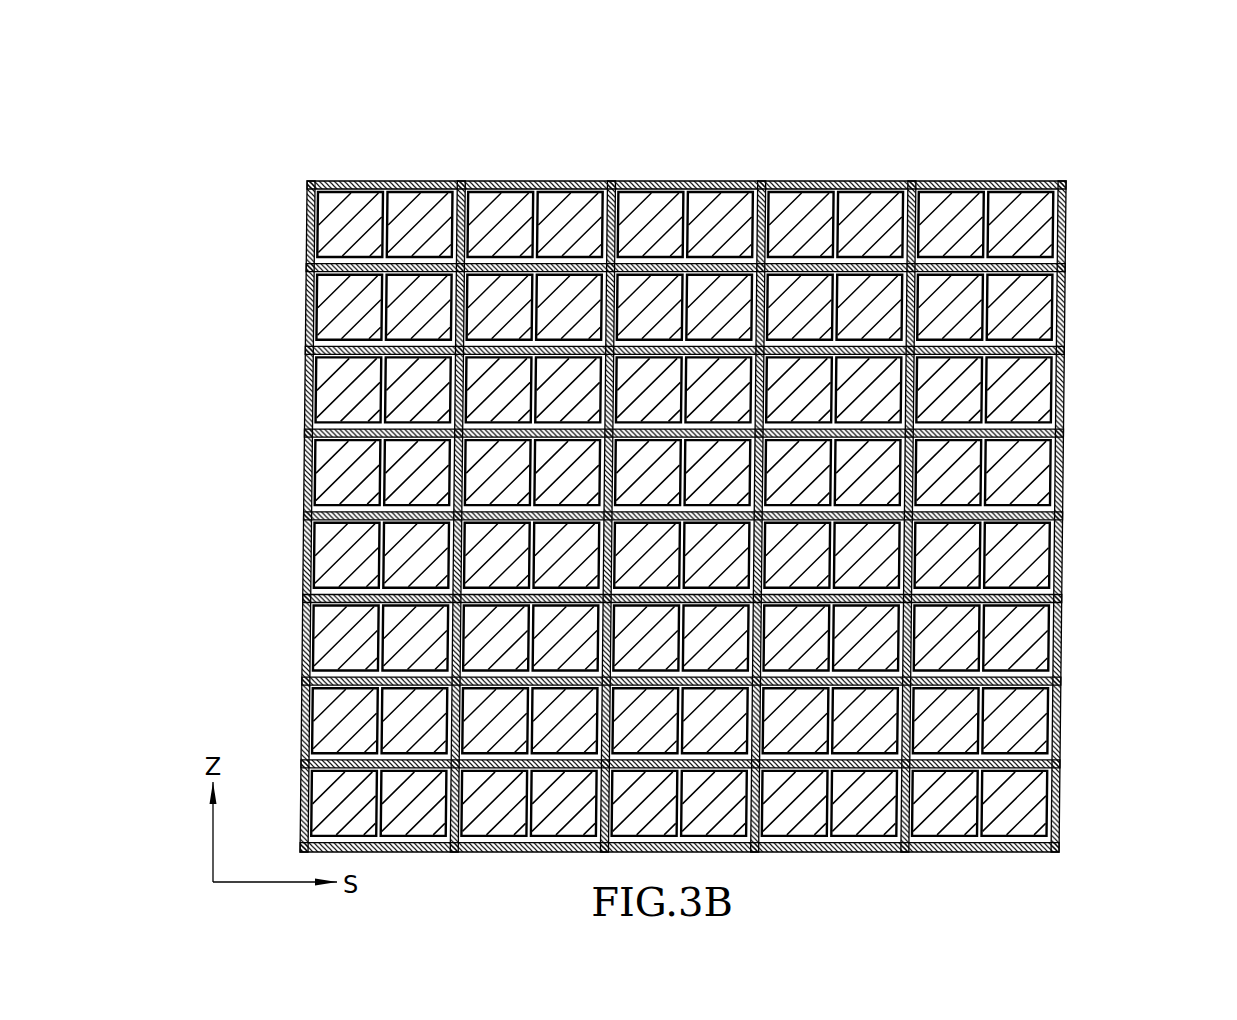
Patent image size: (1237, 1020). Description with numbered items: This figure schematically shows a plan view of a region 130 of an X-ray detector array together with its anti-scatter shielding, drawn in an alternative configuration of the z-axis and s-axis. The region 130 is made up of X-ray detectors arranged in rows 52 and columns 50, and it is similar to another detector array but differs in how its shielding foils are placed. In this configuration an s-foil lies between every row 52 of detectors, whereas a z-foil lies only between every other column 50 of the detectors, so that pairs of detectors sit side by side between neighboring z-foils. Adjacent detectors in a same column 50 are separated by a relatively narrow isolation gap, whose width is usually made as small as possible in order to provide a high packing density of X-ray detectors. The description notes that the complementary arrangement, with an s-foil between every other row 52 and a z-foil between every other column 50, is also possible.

The region of a detector array 130 is at (765, 454).
The column 50 is at (357, 170).
The row 52 is at (1087, 220).